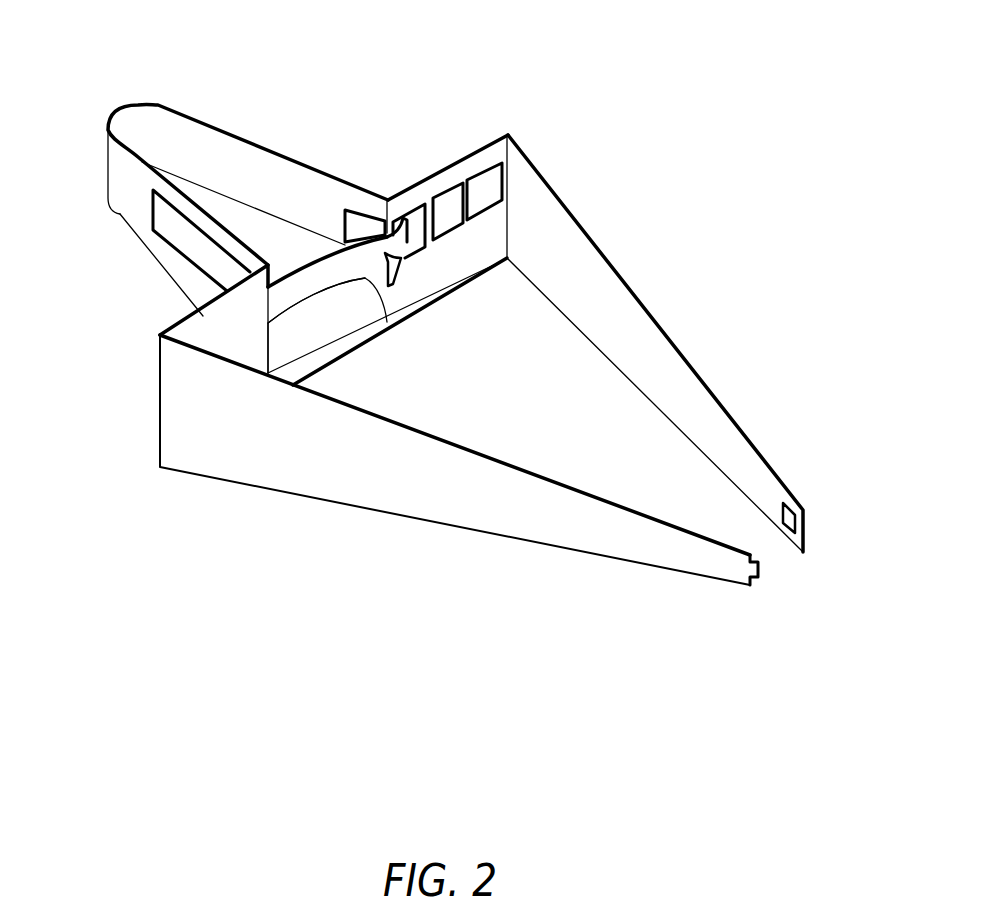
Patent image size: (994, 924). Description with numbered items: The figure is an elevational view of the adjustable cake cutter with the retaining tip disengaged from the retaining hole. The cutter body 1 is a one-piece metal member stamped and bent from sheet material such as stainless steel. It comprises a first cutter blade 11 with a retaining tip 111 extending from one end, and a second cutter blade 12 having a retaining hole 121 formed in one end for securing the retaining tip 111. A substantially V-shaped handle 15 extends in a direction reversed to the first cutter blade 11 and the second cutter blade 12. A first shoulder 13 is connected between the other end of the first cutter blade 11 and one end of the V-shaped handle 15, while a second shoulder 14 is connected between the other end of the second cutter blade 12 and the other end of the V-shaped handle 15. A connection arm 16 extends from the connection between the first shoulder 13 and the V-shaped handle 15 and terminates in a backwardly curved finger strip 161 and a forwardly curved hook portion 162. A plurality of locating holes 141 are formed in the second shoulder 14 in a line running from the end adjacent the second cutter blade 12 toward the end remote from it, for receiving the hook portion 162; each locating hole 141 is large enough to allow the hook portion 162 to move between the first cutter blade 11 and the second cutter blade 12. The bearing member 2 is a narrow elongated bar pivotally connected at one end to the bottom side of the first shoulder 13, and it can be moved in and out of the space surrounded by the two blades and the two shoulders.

The cutter body 1 is at (620, 210).
The first cutter blade 11 is at (442, 503).
The retaining tip 111 is at (758, 567).
The second cutter blade 12 is at (675, 376).
The retaining hole 121 is at (788, 522).
The first shoulder 13 is at (202, 315).
The second shoulder 14 is at (468, 163).
The locating holes 141 is at (418, 217).
The V-shaped handle 15 is at (128, 190).
The connection arm 16 is at (312, 268).
The finger strip 161 is at (393, 222).
The hook portion 162 is at (393, 268).
The bearing member 2 is at (330, 355).